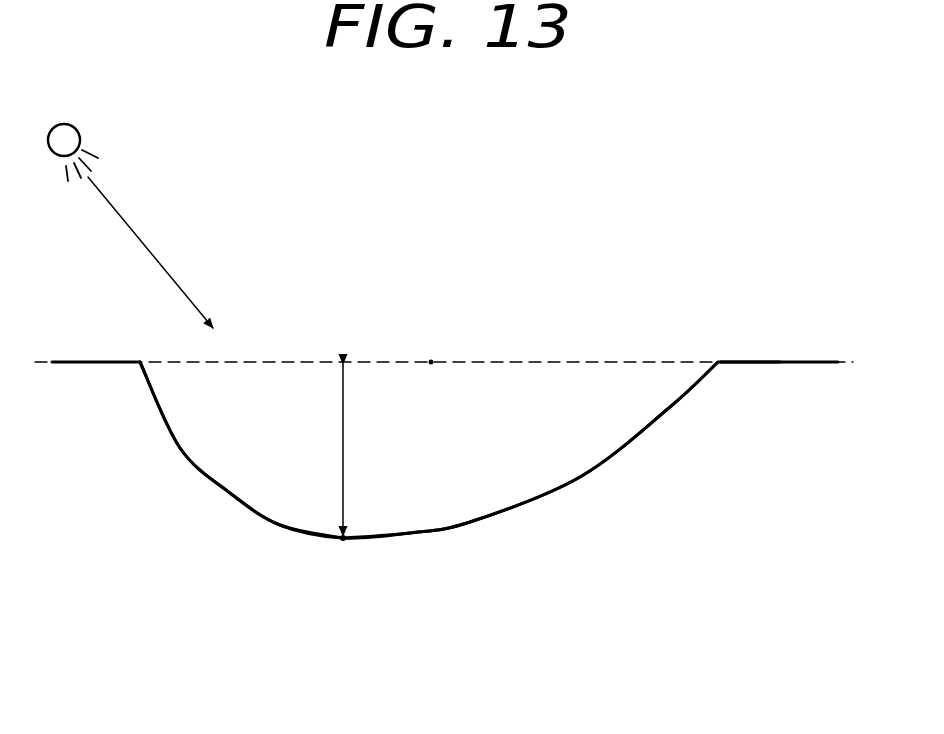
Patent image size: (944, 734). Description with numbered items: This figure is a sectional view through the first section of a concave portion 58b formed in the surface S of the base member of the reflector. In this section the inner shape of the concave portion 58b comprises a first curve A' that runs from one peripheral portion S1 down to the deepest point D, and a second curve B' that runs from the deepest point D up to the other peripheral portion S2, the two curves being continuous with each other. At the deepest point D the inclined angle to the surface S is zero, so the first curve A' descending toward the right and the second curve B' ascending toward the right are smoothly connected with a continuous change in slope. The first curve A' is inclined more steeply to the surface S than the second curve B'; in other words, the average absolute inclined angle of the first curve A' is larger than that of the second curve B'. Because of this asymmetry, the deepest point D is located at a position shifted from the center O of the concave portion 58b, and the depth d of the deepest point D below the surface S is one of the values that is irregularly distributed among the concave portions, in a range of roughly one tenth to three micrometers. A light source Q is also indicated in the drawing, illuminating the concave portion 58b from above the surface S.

The light source Q is at (80, 137).
The one peripheral portion S1 is at (140, 356).
The other peripheral portion S2 is at (720, 356).
The surface of the base member S is at (796, 358).
The concave portion 58b is at (246, 382).
The center of the concave portion O is at (432, 342).
The first curve A' is at (205, 450).
The second curve B' is at (530, 450).
The depth d is at (354, 450).
The deepest point D is at (345, 559).